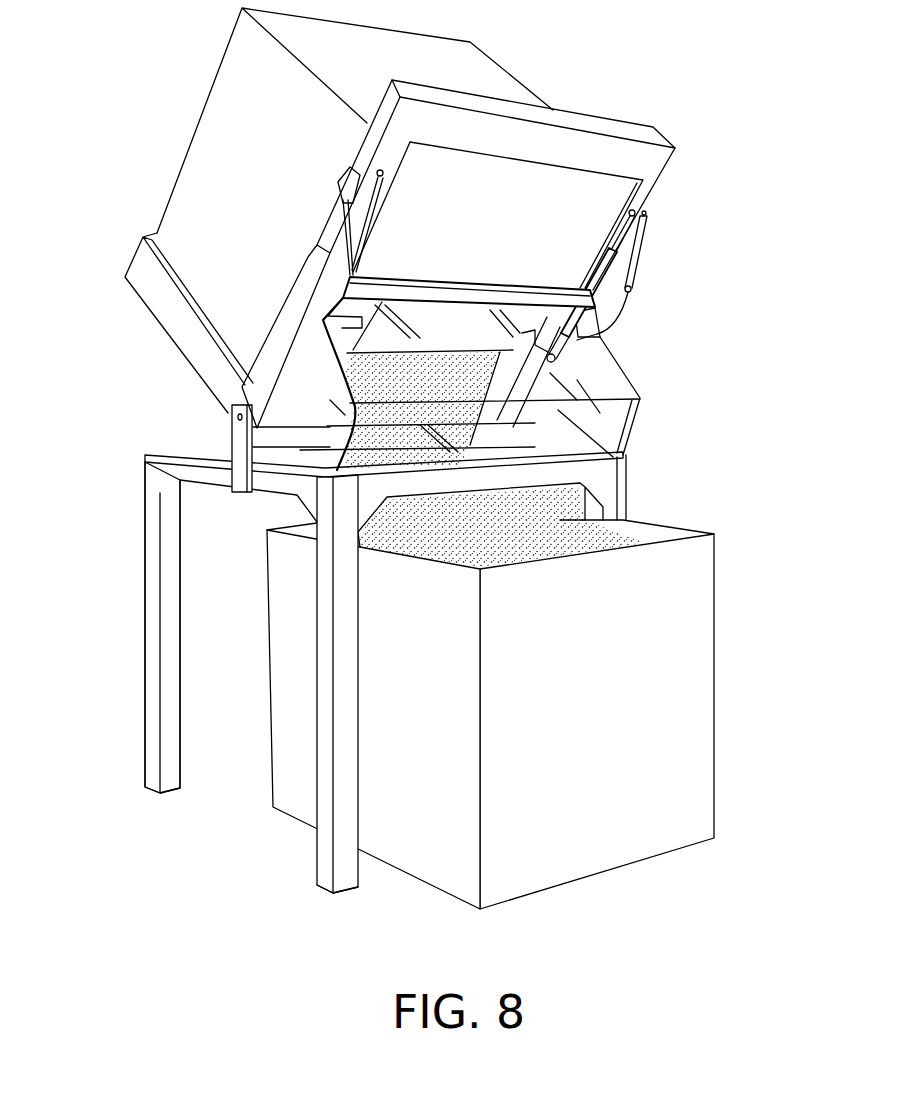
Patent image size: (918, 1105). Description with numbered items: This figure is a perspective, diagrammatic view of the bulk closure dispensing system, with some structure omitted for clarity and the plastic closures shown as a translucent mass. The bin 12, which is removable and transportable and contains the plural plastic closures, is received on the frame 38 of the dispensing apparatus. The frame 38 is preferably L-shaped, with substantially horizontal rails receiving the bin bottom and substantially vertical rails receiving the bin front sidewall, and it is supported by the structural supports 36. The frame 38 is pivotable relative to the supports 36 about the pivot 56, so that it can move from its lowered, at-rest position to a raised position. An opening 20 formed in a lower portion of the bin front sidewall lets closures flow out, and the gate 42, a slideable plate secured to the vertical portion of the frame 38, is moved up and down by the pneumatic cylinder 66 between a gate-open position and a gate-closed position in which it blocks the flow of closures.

The bin 12 is at (233, 138).
The opening 20 is at (405, 392).
The supports 36 is at (150, 665).
The frame 38 is at (648, 190).
The gate 42 is at (570, 342).
The pivot 56 is at (232, 417).
The pneumatic cylinder 66 is at (607, 261).